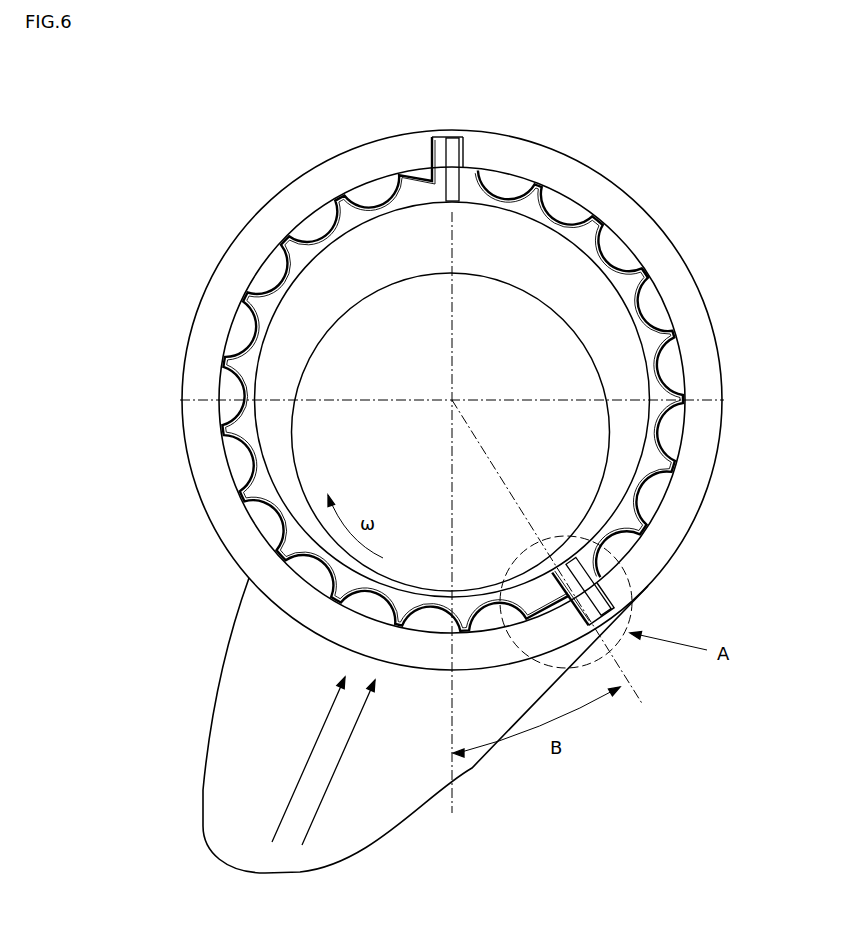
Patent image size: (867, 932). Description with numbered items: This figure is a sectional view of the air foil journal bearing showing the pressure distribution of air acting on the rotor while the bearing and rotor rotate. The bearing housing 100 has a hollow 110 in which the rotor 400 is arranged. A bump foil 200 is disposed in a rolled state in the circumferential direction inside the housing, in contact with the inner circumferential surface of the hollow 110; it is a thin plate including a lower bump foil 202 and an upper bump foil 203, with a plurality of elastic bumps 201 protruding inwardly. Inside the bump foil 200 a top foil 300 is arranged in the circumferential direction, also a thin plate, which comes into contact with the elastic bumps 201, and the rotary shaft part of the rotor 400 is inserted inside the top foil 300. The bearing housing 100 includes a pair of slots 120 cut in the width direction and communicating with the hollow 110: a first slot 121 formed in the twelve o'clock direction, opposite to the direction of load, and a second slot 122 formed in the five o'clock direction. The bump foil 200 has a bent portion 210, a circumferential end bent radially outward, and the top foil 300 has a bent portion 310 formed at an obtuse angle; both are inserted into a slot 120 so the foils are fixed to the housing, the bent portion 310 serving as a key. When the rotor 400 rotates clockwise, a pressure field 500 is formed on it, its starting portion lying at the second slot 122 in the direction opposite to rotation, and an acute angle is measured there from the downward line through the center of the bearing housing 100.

The bearing housing 100 is at (587, 185).
The hollow 110 is at (316, 310).
The slots 120 is at (577, 402).
The first slot 121 is at (433, 133).
The second slot 122 is at (628, 633).
The bump foil 200 is at (515, 384).
The elastic bumps 201 is at (653, 320).
The lower bump foil 202 is at (600, 222).
The upper bump foil 203 is at (640, 302).
The bent portion 210 is at (428, 160).
The top foil 300 is at (660, 375).
The bent portion 310 is at (462, 160).
The rotor 400 is at (330, 377).
The pressure field 500 is at (250, 732).